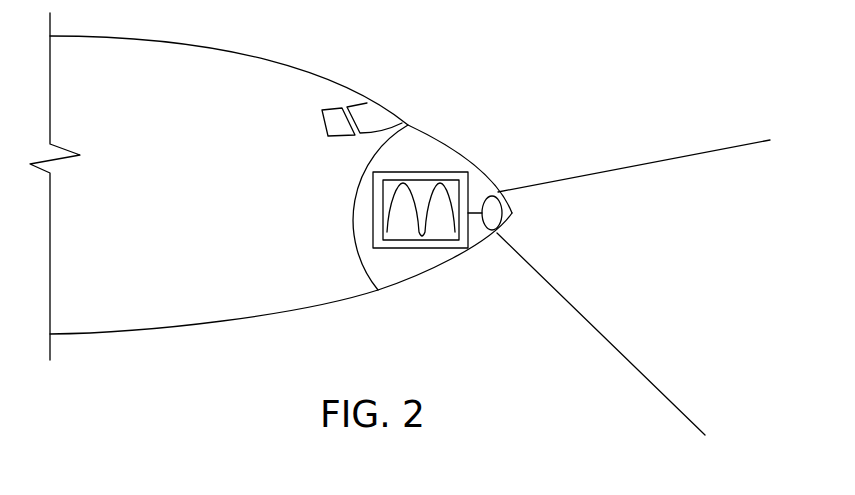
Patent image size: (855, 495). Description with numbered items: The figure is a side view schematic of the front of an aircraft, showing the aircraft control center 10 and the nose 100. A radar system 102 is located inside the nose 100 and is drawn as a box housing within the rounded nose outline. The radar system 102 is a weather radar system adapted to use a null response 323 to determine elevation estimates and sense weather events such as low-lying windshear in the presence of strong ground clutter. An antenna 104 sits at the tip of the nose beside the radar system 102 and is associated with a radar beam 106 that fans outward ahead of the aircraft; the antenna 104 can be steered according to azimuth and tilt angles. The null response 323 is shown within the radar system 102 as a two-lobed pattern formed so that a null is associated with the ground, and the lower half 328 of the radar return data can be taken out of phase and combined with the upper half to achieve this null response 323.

The aircraft control center 10 is at (248, 50).
The nose 100 is at (420, 128).
The radar system 102 is at (383, 250).
The antenna 104 is at (487, 208).
The radar beam 106 is at (657, 161).
The null response 323 is at (443, 241).
The lower half 328 is at (390, 187).